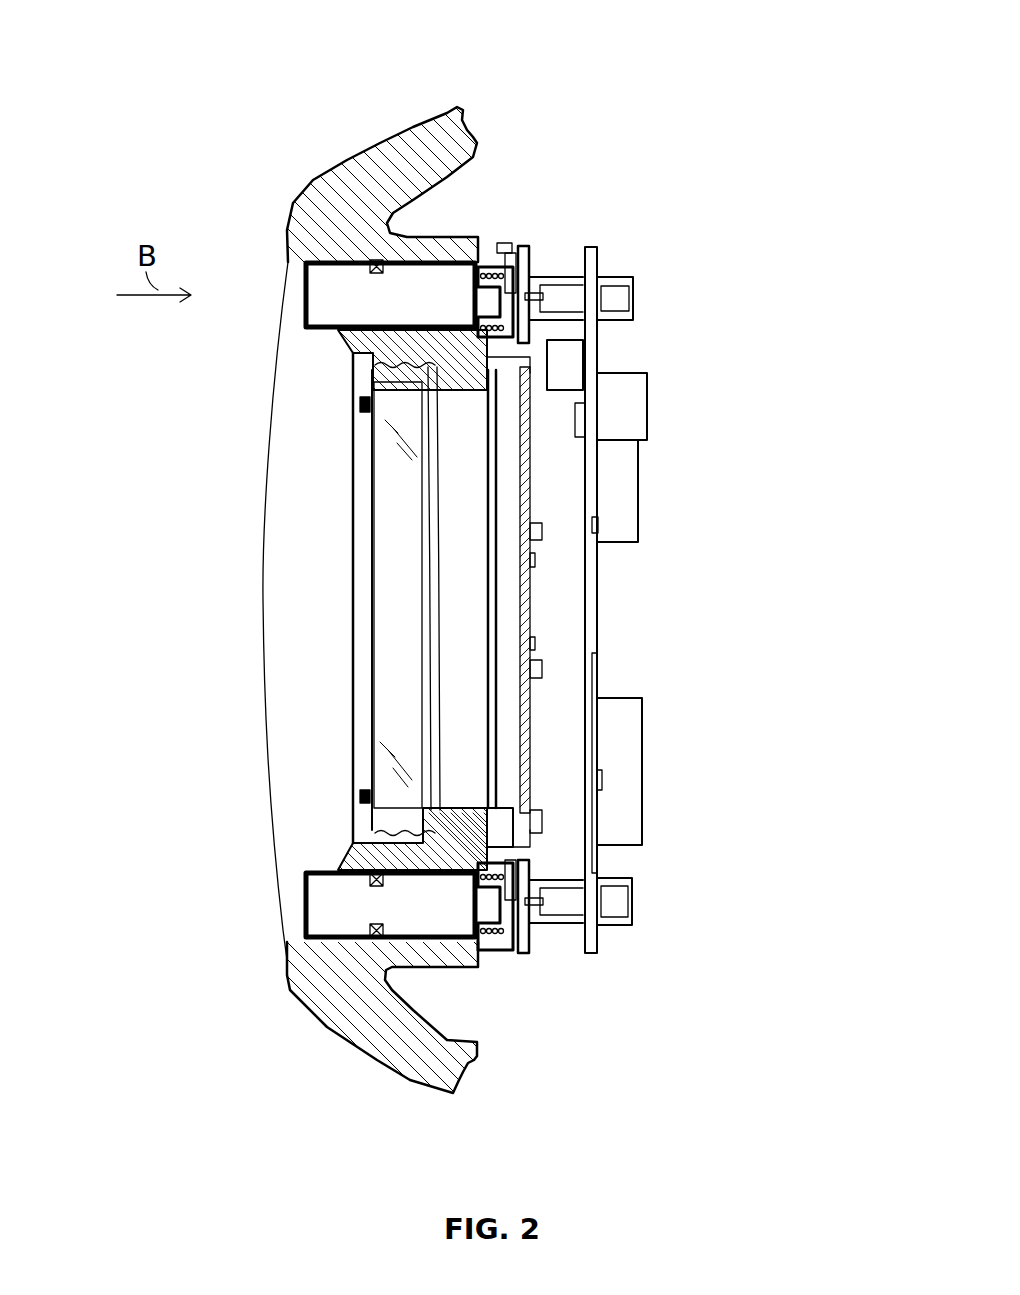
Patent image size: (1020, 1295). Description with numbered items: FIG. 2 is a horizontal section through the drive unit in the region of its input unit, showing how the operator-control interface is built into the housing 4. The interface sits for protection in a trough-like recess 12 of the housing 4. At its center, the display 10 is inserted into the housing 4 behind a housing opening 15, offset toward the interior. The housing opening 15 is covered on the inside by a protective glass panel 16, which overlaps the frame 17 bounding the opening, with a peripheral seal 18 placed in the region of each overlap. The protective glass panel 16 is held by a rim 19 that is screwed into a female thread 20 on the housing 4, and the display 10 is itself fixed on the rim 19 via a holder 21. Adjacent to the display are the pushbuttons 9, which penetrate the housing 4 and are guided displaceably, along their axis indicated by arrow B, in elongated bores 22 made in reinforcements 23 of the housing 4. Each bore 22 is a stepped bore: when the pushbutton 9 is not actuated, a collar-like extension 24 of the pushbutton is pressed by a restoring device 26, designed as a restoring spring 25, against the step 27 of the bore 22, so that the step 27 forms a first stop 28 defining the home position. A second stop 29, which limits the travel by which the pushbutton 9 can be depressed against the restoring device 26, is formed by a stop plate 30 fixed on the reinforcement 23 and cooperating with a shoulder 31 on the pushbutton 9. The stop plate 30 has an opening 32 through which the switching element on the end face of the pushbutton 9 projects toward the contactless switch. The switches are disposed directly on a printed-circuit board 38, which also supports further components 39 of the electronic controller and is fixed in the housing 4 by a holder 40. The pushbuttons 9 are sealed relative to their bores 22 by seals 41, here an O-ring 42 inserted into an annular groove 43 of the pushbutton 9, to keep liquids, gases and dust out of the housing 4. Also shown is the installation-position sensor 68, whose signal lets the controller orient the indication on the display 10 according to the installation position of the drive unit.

The housing 4 is at (437, 133).
The pushbutton 9 is at (333, 310).
The display 10 is at (490, 743).
The trough-like recess 12 is at (287, 680).
The housing opening 15 is at (357, 445).
The protective glass panel 16 is at (397, 490).
The frame 17 is at (355, 385).
The peripheral seal 18 is at (357, 405).
The rim 19 is at (455, 367).
The female thread 20 is at (405, 858).
The holder 21 is at (502, 380).
The elongated bore 22 is at (390, 943).
The reinforcement 23 is at (462, 848).
The collar-like extension 24 is at (499, 262).
The restoring spring 25 is at (503, 245).
The restoring device 26 is at (490, 943).
The step 27 is at (430, 258).
The first stop 28 is at (398, 941).
The second stop 29 is at (537, 935).
The stop plate 30 is at (515, 342).
The shoulder 31 is at (503, 886).
The opening 32 is at (527, 262).
The printed-circuit board 38 is at (597, 575).
The further components 39 is at (640, 382).
The holder 40 is at (623, 903).
The seal 41 is at (380, 240).
The O-ring 42 is at (380, 932).
The annular groove 43 is at (373, 887).
The installation-position sensor 68 is at (622, 738).